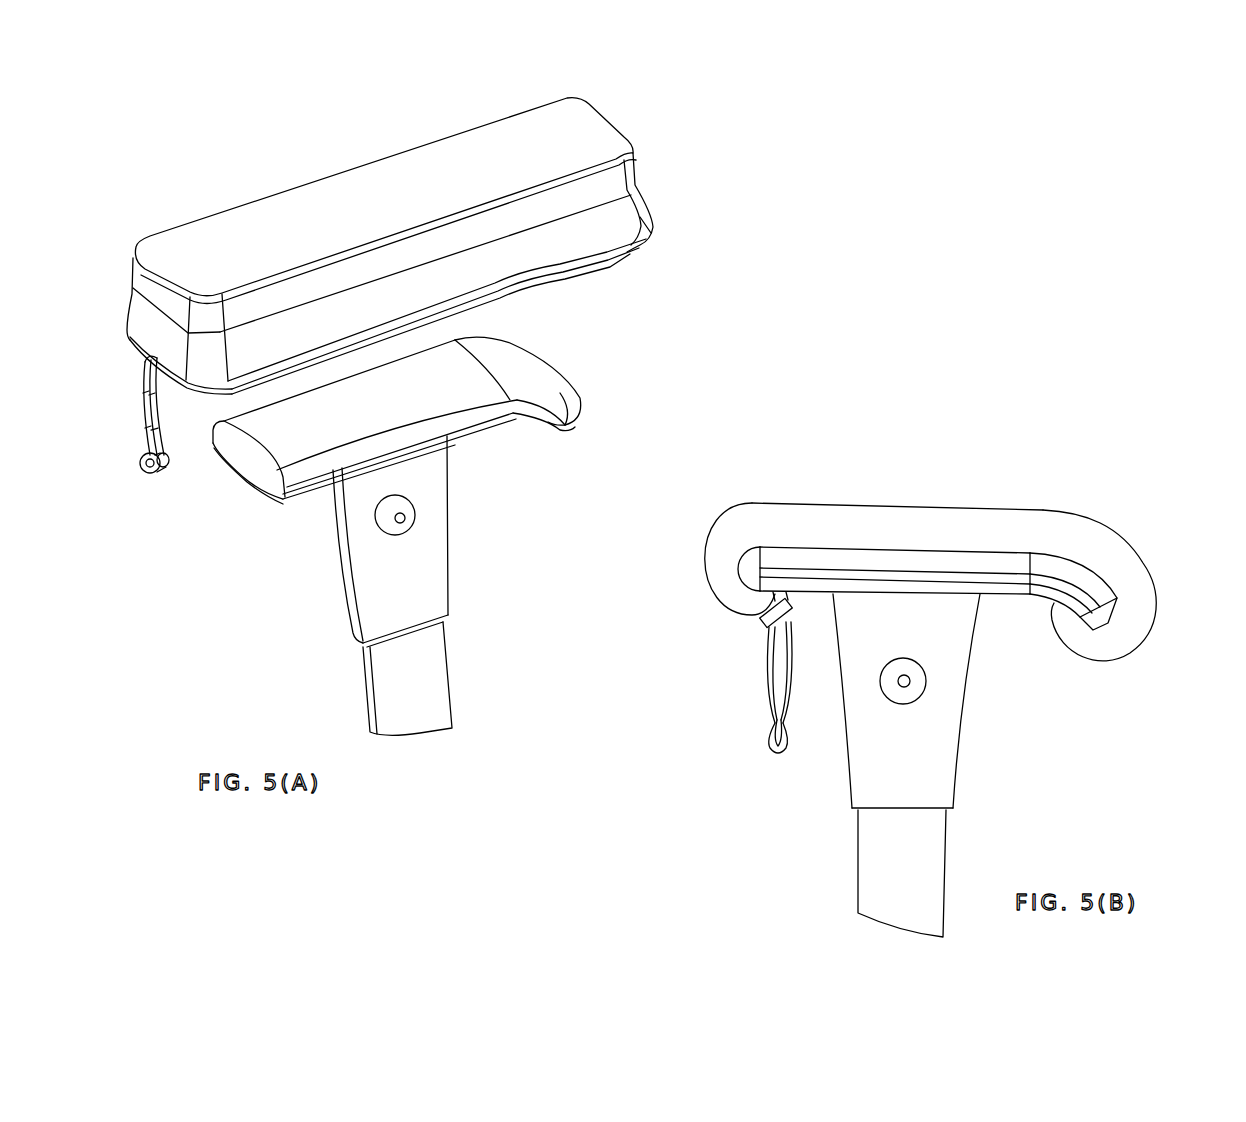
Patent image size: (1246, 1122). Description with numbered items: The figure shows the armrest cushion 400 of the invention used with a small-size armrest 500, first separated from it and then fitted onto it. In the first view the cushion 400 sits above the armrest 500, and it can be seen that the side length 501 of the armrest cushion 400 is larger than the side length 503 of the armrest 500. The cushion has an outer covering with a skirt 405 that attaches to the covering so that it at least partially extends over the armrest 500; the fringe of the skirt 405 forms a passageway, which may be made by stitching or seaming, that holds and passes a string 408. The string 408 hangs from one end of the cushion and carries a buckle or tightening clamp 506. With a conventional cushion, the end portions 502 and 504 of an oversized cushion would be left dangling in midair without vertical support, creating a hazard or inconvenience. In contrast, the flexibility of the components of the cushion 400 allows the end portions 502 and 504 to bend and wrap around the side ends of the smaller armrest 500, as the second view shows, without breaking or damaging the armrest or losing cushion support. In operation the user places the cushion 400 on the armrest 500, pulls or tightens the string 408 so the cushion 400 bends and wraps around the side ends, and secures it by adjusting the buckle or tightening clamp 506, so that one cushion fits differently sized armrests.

In FIG. 5A, the armrest cushion 400 is at (469, 230).
In FIG. 5B, the armrest cushion 400 is at (929, 554).
In FIG. 5A, the skirt 405 is at (657, 228).
In FIG. 5A, the string 408 is at (143, 387).
In FIG. 5A, the armrest 500 is at (523, 433).
In FIG. 5B, the armrest 500 is at (955, 647).
In FIG. 5A, the side length of the armrest cushion 501 is at (350, 172).
In FIG. 5A, the end portion 502 is at (197, 250).
In FIG. 5B, the end portion 502 is at (715, 563).
In FIG. 5A, the side length of the armrest 503 is at (395, 366).
In FIG. 5A, the end portion 504 is at (583, 133).
In FIG. 5B, the end portion 504 is at (1143, 622).
In FIG. 5A, the buckle or tightening clamp 506 is at (167, 470).